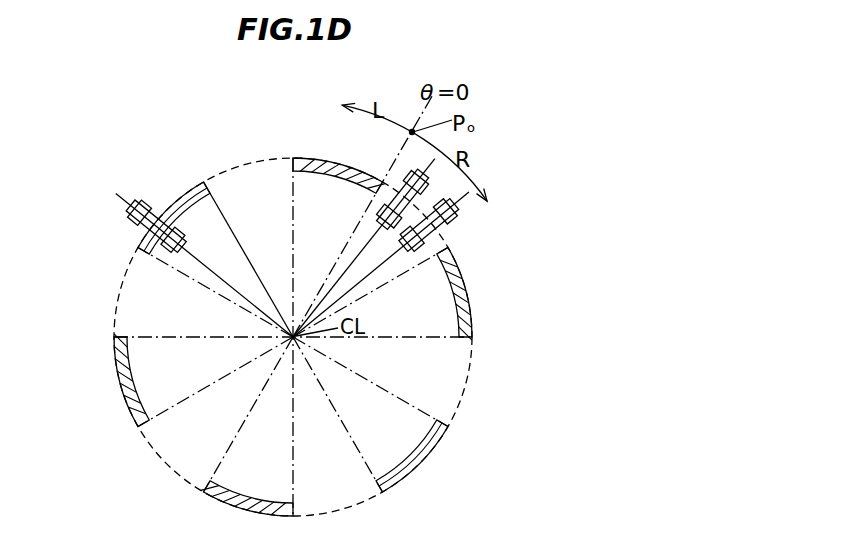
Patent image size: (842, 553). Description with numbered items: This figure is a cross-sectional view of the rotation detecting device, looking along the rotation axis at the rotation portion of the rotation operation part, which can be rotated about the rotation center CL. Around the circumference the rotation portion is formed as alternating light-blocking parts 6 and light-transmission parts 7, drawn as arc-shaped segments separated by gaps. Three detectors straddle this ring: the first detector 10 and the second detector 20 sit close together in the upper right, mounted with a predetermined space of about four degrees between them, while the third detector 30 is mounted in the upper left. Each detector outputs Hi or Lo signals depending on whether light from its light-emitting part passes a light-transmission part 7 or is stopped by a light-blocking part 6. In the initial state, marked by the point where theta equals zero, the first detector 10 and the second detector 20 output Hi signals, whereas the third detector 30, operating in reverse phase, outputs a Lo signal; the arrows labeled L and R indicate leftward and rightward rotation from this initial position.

The light-blocking parts 6 is at (203, 182).
The light-transmission parts 7 is at (257, 167).
The first detector 10 is at (453, 217).
The second detector 20 is at (400, 172).
The third detector 30 is at (144, 206).